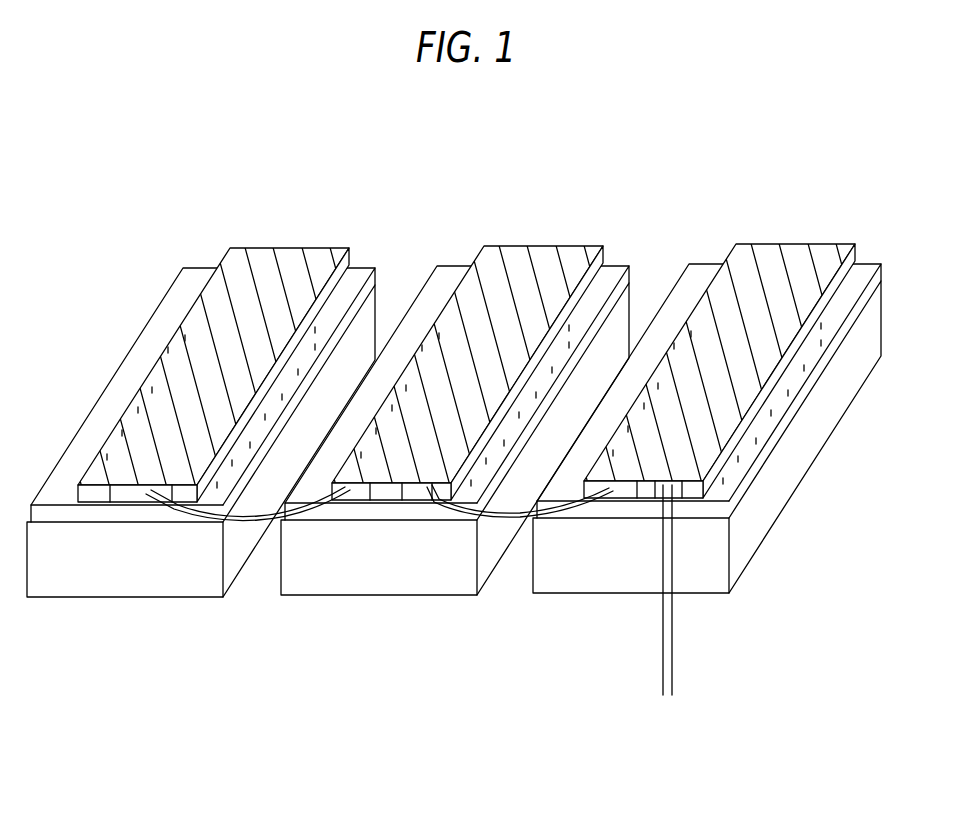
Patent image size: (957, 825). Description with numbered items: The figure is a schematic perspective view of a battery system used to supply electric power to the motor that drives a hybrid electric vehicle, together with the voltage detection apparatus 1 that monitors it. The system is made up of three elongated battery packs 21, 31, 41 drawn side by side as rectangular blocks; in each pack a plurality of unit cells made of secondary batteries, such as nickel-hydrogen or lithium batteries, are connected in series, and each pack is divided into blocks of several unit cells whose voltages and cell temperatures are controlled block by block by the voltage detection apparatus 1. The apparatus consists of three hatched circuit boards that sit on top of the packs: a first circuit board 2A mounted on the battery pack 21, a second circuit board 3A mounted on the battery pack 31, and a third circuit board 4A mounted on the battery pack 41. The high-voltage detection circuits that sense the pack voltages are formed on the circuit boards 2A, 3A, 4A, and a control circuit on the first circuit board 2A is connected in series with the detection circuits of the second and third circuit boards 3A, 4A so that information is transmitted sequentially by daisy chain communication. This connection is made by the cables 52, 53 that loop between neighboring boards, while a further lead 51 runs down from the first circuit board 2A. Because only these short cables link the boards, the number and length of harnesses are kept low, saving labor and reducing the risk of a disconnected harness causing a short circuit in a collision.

The voltage detection apparatus 1 is at (803, 178).
The first circuit board 2A is at (702, 350).
The second circuit board 3A is at (372, 252).
The third circuit board 4A is at (372, 250).
The battery pack 21 is at (707, 460).
The battery pack 31 is at (455, 460).
The battery pack 41 is at (98, 580).
The first wire 51 is at (674, 630).
The cable 52 is at (512, 520).
The cable 53 is at (250, 518).